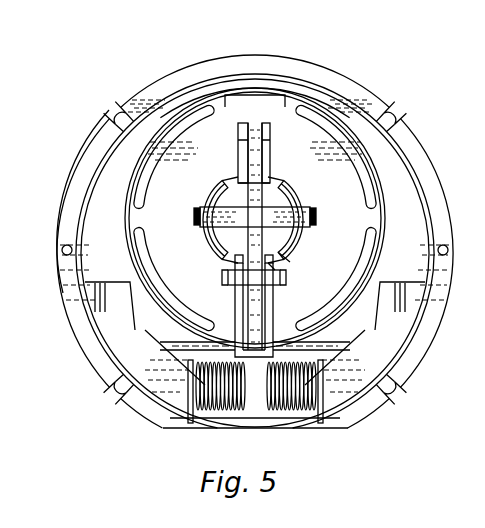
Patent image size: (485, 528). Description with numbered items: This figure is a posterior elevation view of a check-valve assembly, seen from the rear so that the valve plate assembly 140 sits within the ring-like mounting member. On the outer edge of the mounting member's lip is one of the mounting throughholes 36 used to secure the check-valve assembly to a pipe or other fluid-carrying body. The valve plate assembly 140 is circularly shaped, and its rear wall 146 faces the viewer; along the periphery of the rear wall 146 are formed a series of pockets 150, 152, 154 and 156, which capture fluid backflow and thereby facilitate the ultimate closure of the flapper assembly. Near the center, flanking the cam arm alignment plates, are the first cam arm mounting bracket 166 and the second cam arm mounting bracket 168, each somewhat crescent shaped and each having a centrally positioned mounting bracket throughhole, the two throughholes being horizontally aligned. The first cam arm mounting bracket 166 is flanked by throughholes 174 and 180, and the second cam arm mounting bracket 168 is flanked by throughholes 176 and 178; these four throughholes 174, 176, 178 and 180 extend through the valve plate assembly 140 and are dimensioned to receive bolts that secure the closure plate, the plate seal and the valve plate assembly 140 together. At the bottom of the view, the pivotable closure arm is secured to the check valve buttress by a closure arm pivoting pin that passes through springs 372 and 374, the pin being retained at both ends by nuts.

The mounting throughhole 36 is at (271, 241).
The valve plate assembly 140 is at (137, 213).
The rear wall 146 is at (218, 137).
The pocket 150 is at (187, 127).
The pocket 152 is at (318, 128).
The pocket 154 is at (305, 250).
The pocket 156 is at (200, 278).
The first cam arm mounting bracket 166 is at (194, 218).
The second cam arm mounting bracket 168 is at (340, 214).
The throughhole 174 is at (97, 133).
The throughhole 176 is at (312, 182).
The throughhole 178 is at (328, 310).
The throughhole 180 is at (207, 258).
The spring 372 is at (205, 405).
The spring 374 is at (302, 407).